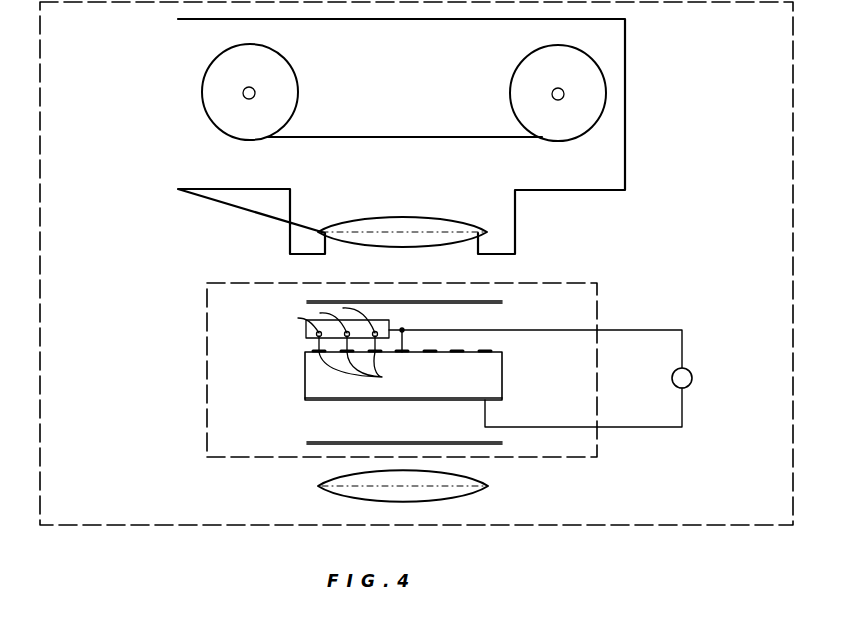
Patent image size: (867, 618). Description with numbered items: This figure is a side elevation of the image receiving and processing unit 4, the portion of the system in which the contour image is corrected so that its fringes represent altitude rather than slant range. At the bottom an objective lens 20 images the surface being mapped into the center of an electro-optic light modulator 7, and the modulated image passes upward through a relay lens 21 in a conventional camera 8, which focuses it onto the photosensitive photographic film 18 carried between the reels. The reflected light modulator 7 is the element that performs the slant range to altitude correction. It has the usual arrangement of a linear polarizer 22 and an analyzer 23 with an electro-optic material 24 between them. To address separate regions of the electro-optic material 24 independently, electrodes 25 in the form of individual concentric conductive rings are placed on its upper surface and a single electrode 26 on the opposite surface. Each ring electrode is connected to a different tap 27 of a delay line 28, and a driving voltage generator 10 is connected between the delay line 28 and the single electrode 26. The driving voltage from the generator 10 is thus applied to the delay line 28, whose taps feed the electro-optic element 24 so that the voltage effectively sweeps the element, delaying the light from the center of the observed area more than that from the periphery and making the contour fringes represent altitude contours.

The image receiving and processing unit 4 is at (203, 529).
The camera 8 is at (175, 110).
The photosensitive photographic film 18 is at (398, 136).
The relay lens 21 is at (462, 219).
The electro-optic light modulator 7 is at (203, 360).
The analyzer 23 is at (490, 303).
The linear polarizer 22 is at (490, 443).
The delay line 28 is at (383, 316).
The tap 27 is at (330, 310).
The electro-optic material 24 is at (304, 370).
The electrodes 25 is at (367, 371).
The single electrode 26 is at (316, 398).
The driving voltage generator 10 is at (692, 373).
The objective lens 20 is at (318, 488).